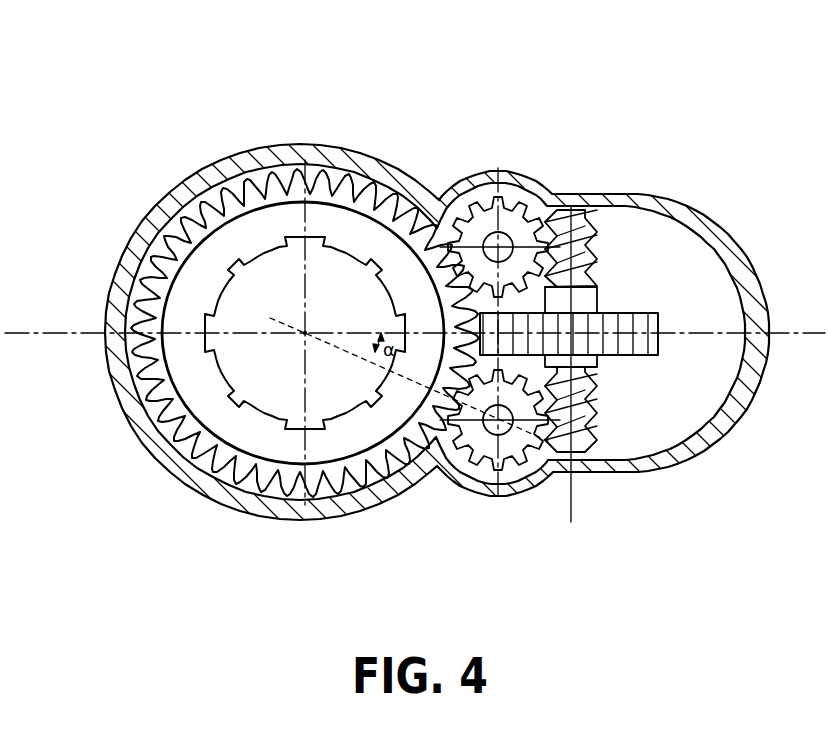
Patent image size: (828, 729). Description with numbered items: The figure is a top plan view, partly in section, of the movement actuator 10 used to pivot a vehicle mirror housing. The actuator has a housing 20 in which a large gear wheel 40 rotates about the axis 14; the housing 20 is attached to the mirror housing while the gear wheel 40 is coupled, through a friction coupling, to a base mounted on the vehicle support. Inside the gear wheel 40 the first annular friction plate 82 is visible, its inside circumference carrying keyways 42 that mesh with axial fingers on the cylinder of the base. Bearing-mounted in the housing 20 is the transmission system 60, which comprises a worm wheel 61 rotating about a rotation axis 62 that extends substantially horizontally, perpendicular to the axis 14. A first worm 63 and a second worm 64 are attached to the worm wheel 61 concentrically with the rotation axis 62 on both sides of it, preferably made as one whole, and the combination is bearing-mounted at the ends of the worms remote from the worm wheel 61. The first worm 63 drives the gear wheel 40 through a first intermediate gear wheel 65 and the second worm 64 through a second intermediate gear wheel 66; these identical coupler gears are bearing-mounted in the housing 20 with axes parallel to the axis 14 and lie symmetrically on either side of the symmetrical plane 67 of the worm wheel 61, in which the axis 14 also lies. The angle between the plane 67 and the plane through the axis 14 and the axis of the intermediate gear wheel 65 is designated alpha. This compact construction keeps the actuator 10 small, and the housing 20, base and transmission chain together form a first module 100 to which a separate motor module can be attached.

The movement actuator 10 is at (664, 112).
The axis 14 is at (306, 332).
The housing 20 is at (158, 462).
The gear wheel 40 is at (190, 478).
The keyways 42 is at (152, 232).
The transmission system 60 is at (497, 130).
The worm wheel 61 is at (660, 322).
The rotation axis 62 is at (572, 503).
The first worm 63 is at (598, 400).
The second worm 64 is at (598, 260).
The first intermediate gear wheel 65 is at (478, 490).
The second intermediate gear wheel 66 is at (481, 183).
The symmetrical plane 67 is at (41, 331).
The first annular friction plate 82 is at (228, 262).
The first module 100 is at (204, 125).